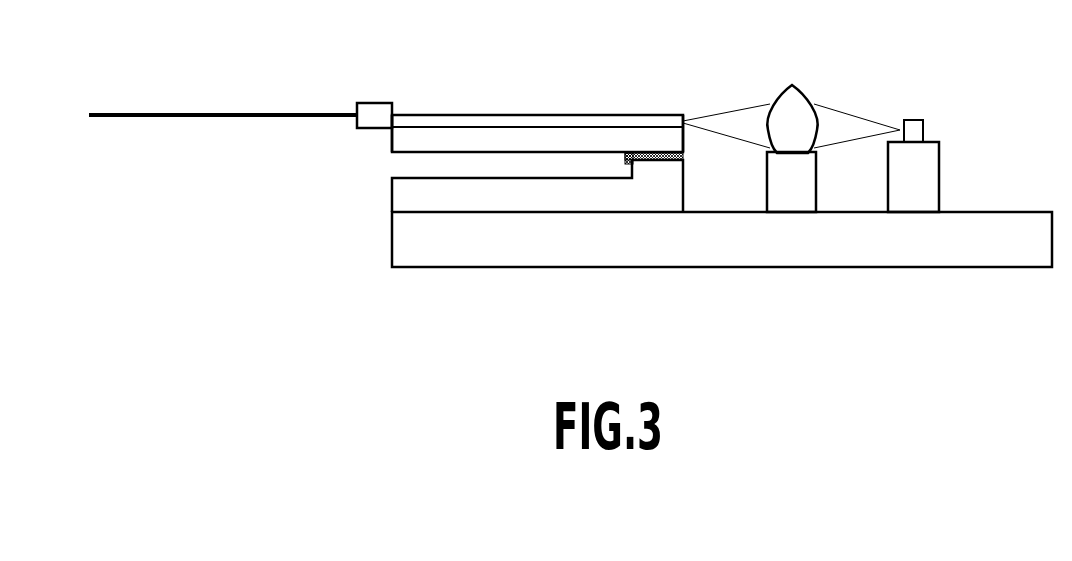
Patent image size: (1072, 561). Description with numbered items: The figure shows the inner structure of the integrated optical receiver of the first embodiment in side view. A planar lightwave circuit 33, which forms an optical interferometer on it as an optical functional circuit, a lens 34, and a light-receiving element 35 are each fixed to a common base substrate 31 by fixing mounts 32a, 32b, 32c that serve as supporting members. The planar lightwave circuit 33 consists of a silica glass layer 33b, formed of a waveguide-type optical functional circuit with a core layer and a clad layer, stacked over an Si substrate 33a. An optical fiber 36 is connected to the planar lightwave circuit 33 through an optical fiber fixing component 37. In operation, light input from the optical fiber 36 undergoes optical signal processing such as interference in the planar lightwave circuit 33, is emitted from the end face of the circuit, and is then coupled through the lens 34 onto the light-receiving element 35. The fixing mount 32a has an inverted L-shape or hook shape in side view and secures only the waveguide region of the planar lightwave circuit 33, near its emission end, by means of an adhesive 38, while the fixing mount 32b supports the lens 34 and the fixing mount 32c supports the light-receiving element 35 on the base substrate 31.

The base substrate 31 is at (1015, 212).
The fixing mount 32a is at (408, 200).
The fixing mount 32b is at (793, 192).
The fixing mount 32c is at (924, 192).
The planar lightwave circuit 33 is at (548, 165).
The Si substrate 33a is at (392, 133).
The silica glass layer 33b is at (670, 113).
The lens 34 is at (805, 88).
The light-receiving element 35 is at (916, 119).
The optical fiber 36 is at (233, 112).
The optical fiber fixing component 37 is at (377, 103).
The adhesive 38 is at (685, 153).